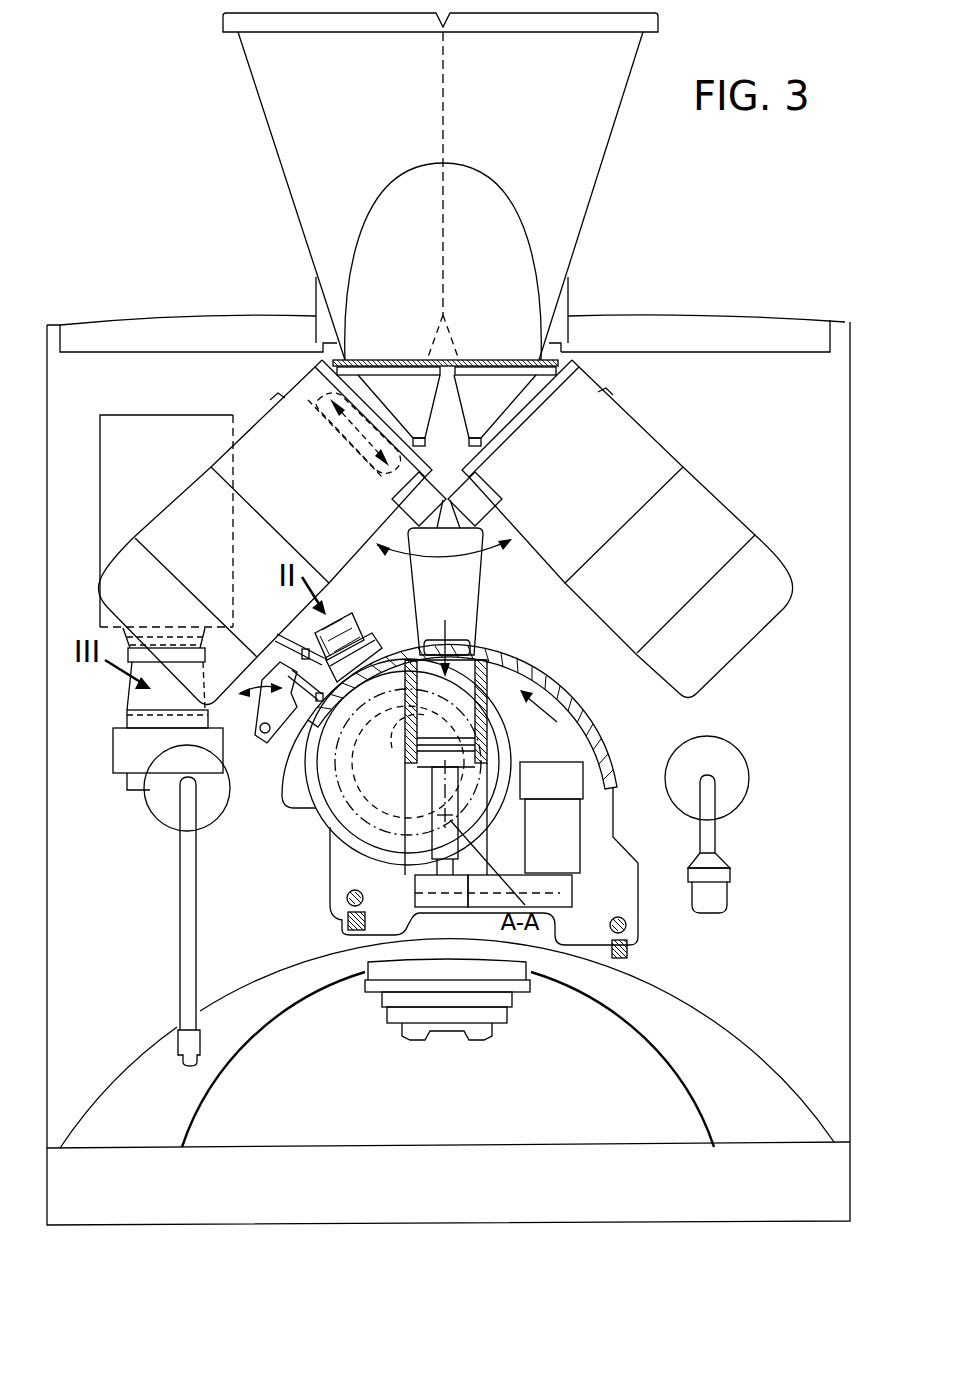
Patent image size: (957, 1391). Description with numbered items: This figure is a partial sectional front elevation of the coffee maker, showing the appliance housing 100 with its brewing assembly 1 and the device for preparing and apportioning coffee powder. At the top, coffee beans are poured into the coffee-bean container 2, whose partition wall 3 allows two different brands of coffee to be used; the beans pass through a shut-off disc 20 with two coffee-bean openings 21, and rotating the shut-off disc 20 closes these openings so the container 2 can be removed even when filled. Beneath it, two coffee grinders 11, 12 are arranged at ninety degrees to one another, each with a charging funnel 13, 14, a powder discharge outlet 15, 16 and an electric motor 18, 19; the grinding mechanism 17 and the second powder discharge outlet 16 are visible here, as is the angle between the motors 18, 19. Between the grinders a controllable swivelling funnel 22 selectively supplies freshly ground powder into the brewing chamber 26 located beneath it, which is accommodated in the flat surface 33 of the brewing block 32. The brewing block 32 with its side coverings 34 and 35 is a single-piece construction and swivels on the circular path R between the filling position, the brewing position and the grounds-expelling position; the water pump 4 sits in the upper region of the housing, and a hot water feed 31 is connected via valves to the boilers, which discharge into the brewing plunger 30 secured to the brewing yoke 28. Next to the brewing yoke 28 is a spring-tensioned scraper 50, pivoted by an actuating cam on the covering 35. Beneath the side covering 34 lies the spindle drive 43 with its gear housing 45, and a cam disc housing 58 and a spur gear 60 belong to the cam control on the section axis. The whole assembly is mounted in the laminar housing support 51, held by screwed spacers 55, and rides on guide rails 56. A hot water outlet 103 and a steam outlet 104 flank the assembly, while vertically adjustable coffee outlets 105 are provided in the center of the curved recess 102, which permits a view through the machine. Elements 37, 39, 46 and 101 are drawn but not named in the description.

The brewing assembly 1 is at (210, 276).
The coffee-bean container 2 is at (242, 105).
The partition wall 3 is at (448, 108).
The water pump 4 is at (138, 440).
The coffee grinder 11 is at (253, 396).
The coffee grinder 12 is at (640, 400).
The charging funnel 13 is at (388, 358).
The charging funnel 14 is at (508, 358).
The powder discharge outlet 15 is at (412, 503).
The powder discharge outlet 16 is at (478, 503).
The grinding mechanism 17 is at (338, 450).
The electric motor 18 is at (185, 518).
The electric motor 19 is at (690, 512).
The shut-off disc 20 is at (409, 348).
The coffee-bean openings 21 is at (489, 358).
The swivelling funnel 22 is at (470, 578).
The brewing chamber 26 is at (432, 707).
The brewing yoke 28 is at (350, 618).
The brewing plunger 30 is at (366, 650).
The hot water feed 31 is at (295, 633).
The brewing block 32 is at (490, 737).
The flat surface 33 is at (480, 655).
The side covering 34 is at (600, 742).
The side covering 35 is at (336, 708).
The piston rod 37 is at (428, 760).
The base block 39 is at (487, 905).
The spindle drive 43 is at (540, 840).
The gear housing 45 is at (558, 893).
The guide housing 46 is at (413, 868).
The scraper 50 is at (258, 740).
The housing support 51 is at (345, 865).
The spacers 55 is at (347, 902).
The guide rails 56 is at (348, 921).
The cam disc housing 58 is at (333, 817).
The spur gear 60 is at (315, 780).
The appliance housing 100 is at (736, 305).
The machine base 101 is at (305, 1146).
The curved recess 102 is at (630, 1030).
The hot water outlet 103 is at (180, 890).
The steam outlet 104 is at (716, 892).
The coffee outlets 105 is at (442, 1052).